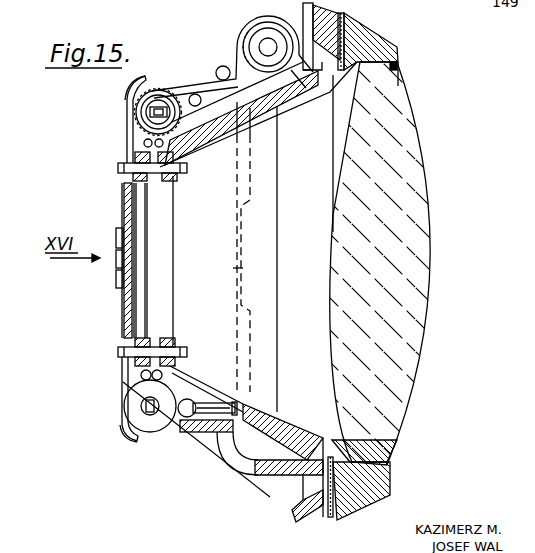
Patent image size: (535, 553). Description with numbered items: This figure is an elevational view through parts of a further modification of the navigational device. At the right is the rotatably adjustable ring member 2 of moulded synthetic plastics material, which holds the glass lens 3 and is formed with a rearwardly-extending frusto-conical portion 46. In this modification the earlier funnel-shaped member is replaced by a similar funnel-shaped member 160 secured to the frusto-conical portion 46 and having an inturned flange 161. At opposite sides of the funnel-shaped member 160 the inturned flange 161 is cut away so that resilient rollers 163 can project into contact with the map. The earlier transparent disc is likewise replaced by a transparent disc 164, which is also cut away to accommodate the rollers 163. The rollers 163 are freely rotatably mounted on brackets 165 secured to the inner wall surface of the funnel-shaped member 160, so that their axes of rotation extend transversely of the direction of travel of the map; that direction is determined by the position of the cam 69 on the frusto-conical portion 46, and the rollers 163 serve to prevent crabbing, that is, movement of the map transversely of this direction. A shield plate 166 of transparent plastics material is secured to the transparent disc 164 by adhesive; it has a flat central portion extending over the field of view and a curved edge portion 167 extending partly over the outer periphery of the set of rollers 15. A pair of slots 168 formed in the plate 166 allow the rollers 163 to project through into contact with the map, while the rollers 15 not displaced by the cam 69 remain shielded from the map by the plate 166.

The ring member 2 is at (368, 500).
The glass lens 3 is at (418, 224).
The rollers 15 is at (118, 256).
The frusto-conical portion 46 is at (291, 431).
The cam 69 is at (238, 268).
The funnel-shaped member 160 is at (256, 162).
The inturned flange 161 is at (146, 233).
The resilient rollers 163 is at (120, 166).
The transparent disc 164 is at (125, 297).
The brackets 165 is at (128, 183).
The shield plate 166 is at (128, 117).
The curved edge portion 167 is at (137, 79).
The slots 168 is at (130, 160).